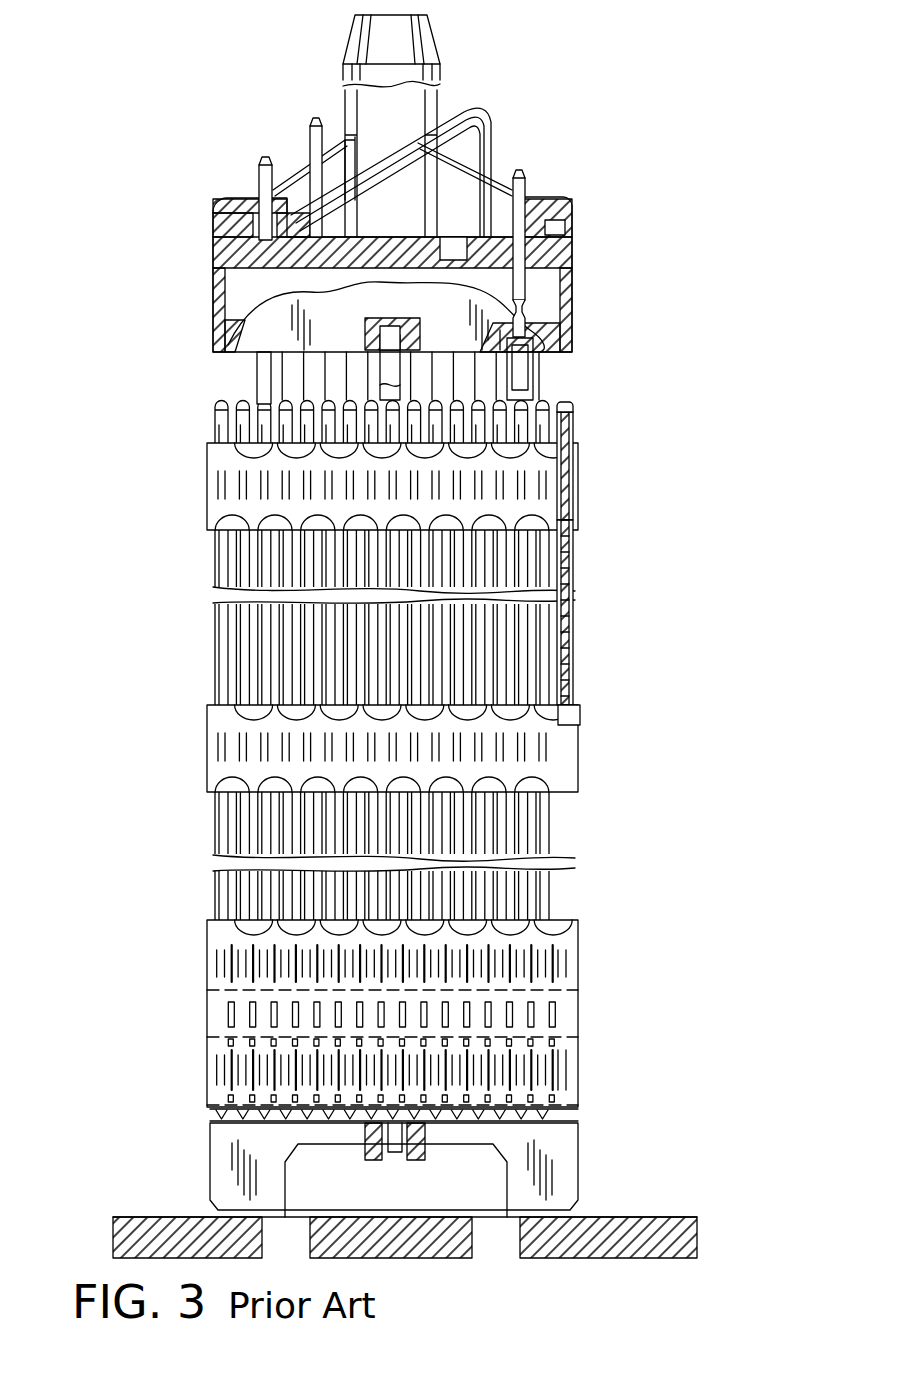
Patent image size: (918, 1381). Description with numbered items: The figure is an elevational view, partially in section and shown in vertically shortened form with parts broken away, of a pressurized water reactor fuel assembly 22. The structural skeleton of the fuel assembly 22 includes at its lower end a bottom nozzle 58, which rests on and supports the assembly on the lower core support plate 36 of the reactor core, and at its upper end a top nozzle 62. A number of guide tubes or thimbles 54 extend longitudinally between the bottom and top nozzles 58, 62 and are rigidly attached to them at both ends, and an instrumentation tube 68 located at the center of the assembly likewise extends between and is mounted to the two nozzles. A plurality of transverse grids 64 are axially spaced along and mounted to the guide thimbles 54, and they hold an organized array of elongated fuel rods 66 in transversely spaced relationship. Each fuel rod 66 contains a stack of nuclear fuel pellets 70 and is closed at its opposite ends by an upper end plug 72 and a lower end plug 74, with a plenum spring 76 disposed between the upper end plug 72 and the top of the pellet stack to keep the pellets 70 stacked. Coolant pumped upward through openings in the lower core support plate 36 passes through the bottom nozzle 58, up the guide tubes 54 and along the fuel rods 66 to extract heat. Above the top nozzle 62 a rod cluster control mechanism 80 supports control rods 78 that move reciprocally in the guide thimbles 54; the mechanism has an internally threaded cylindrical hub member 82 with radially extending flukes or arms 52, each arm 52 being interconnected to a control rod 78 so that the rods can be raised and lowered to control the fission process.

The fuel assembly 22 is at (658, 266).
The lower core support plate 36 is at (610, 1217).
The radially-extending flukes or arms 52 is at (335, 135).
The guide tubes or thimbles 54 is at (252, 381).
The bottom nozzle 58 is at (585, 1163).
The top nozzle 62 is at (577, 248).
The transverse grids 64 is at (207, 495).
The fuel rods 66 is at (207, 650).
The instrumentation tube 68 is at (397, 1125).
The nuclear fuel pellets 70 is at (565, 560).
The upper end plug 72 is at (577, 410).
The lower end plug 74 is at (443, 1123).
The plenum spring 76 is at (575, 470).
The control rods 78 is at (540, 318).
The rod cluster control mechanism 80 is at (485, 120).
The internally threaded cylindrical hub member 82 is at (445, 105).